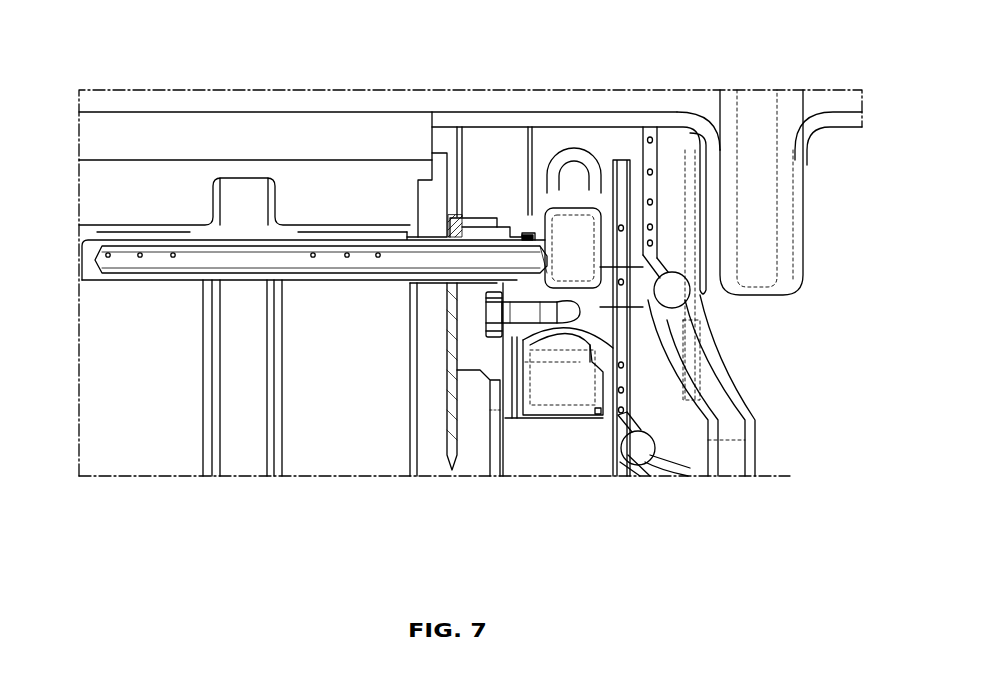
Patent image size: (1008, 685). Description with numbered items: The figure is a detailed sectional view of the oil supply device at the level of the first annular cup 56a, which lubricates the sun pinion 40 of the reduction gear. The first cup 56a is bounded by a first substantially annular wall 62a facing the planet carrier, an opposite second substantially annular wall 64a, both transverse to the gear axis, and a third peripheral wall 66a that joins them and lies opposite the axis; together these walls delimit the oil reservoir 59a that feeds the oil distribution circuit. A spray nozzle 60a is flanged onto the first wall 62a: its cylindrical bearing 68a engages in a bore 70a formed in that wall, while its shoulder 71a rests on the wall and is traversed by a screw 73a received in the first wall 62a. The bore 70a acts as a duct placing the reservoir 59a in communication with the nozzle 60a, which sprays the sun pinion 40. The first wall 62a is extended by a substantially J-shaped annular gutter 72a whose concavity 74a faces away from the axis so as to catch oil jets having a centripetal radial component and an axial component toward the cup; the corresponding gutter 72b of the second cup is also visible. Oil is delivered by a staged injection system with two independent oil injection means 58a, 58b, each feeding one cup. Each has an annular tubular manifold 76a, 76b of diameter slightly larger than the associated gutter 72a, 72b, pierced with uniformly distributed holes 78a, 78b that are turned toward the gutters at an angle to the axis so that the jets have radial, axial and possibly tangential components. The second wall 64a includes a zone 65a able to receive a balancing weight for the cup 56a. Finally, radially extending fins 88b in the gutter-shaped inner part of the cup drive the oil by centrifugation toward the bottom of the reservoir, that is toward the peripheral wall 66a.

The sun pinion 40 is at (103, 192).
The spray nozzle 60a is at (357, 262).
The first substantially annular wall 62a is at (522, 237).
The cylindrical bearing 68a is at (520, 225).
The bore 70a is at (577, 148).
The annular gutter 72a is at (597, 143).
The concavity 74a is at (612, 172).
The first annular cup 56a is at (720, 280).
The second substantially annular wall 64a is at (603, 227).
The holes 78a is at (632, 242).
The holes 78b is at (625, 175).
The zone 65a is at (643, 268).
The annular tubular manifold 76a is at (672, 290).
The oil injection means 58a is at (755, 406).
The annular gutter 72b is at (588, 292).
The oil reservoir 59a is at (588, 295).
The third peripheral wall 66a is at (565, 265).
The fins 88b is at (560, 350).
The screw 73a is at (488, 313).
The shoulder 71a is at (505, 338).
The annular tubular manifold 76b is at (638, 450).
The oil injection means 58b is at (680, 458).